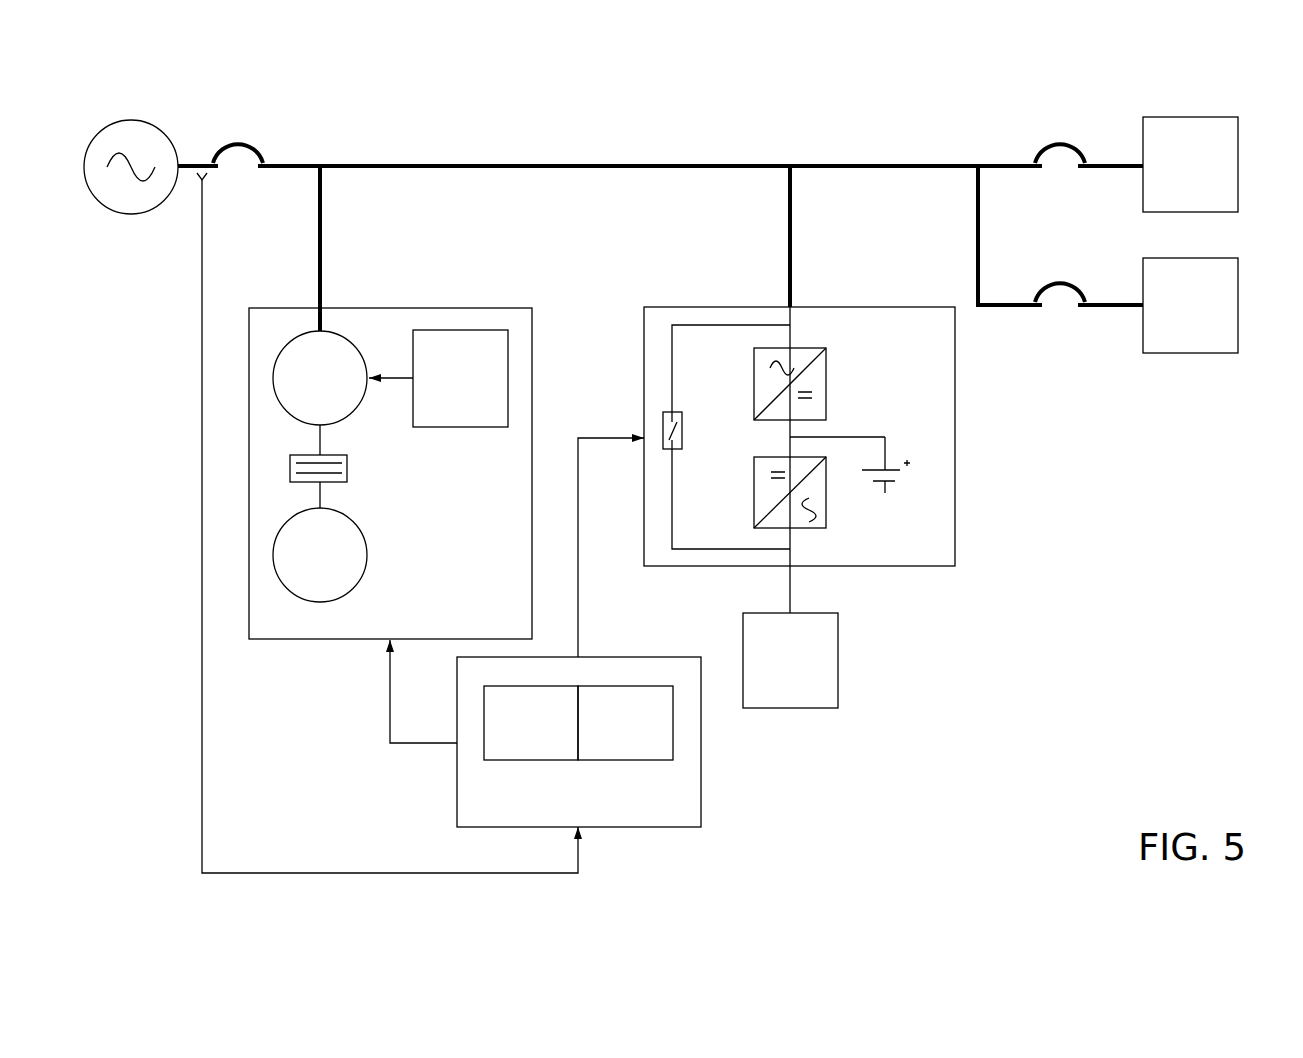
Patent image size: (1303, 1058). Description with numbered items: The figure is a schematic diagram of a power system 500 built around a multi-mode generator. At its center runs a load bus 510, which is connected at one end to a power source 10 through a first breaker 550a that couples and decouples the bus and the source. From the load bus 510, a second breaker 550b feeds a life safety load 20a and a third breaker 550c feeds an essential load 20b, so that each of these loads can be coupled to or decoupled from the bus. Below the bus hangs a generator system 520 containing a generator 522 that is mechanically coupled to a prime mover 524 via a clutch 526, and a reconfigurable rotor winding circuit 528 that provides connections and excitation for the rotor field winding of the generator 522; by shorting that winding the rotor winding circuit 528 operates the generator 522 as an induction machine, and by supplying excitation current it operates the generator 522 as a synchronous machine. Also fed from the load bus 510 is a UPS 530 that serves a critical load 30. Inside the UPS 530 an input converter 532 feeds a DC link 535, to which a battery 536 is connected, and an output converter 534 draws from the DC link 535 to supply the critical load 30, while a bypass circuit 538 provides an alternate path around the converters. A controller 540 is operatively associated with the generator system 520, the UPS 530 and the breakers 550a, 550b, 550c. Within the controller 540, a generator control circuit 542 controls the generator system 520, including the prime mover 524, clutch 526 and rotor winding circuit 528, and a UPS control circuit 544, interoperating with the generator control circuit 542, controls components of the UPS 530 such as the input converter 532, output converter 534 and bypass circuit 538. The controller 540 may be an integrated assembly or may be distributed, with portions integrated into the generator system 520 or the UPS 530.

The power source 10 is at (133, 118).
The life safety load 20a is at (1188, 117).
The essential load 20b is at (1188, 258).
The critical load 30 is at (840, 658).
The power system 500 is at (651, 92).
The load bus 510 is at (342, 165).
The generator system 520 is at (390, 402).
The generator 522 is at (353, 413).
The prime mover 524 is at (368, 553).
The clutch 526 is at (347, 468).
The rotor winding circuit 528 is at (462, 427).
The UPS 530 is at (799, 440).
The input converter 532 is at (826, 383).
The output converter 534 is at (826, 490).
The DC link 535 is at (790, 440).
The battery 536 is at (899, 448).
The bypass circuit 538 is at (683, 423).
The controller 540 is at (609, 742).
The generator control circuit 542 is at (530, 762).
The UPS control circuit 544 is at (627, 762).
The first breaker 550a is at (241, 135).
The second breaker 550b is at (1020, 131).
The third breaker 550c is at (808, 221).